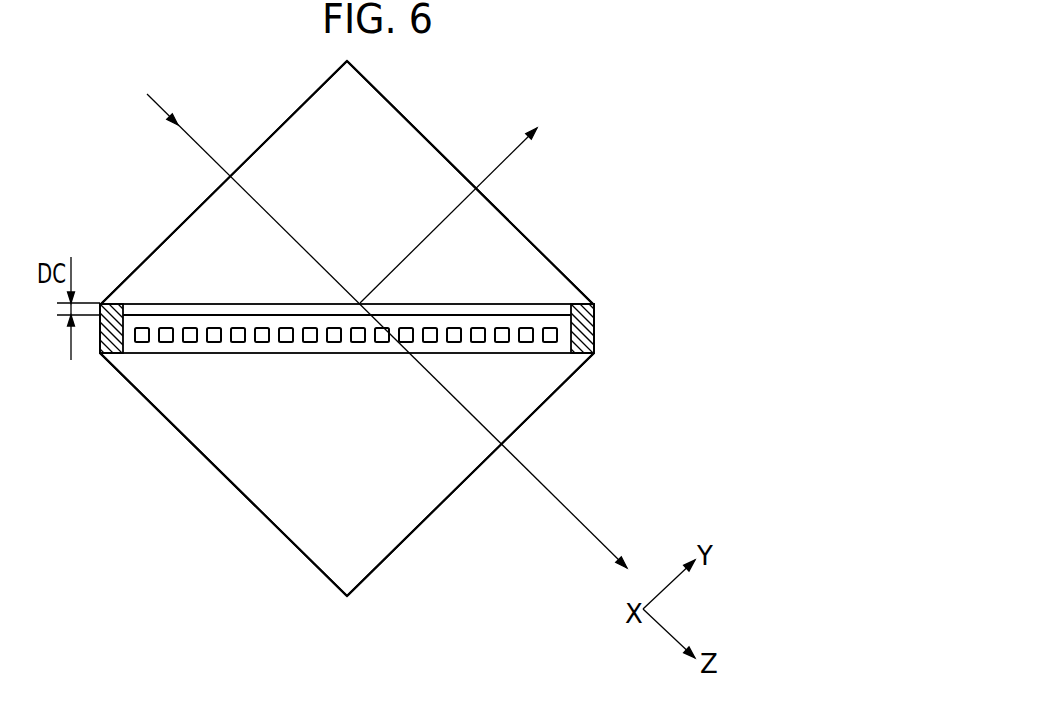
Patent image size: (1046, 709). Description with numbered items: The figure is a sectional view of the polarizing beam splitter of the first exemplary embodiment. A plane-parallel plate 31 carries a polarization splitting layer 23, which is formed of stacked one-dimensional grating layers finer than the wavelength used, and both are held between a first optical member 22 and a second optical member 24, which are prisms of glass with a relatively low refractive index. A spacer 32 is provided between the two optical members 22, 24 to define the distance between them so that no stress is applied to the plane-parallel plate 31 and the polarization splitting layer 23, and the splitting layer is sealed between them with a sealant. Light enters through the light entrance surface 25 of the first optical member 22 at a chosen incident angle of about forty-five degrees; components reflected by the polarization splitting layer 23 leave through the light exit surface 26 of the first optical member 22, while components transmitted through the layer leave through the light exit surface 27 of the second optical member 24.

The first optical member 22 is at (483, 218).
The polarization splitting layer 23 is at (540, 346).
The second optical member 24 is at (413, 507).
The light entrance surface 25 is at (308, 97).
The light exit surface 26 is at (420, 128).
The light exit surface 27 is at (380, 565).
The plane-parallel plate 31 is at (533, 310).
The spacer 32 is at (593, 312).